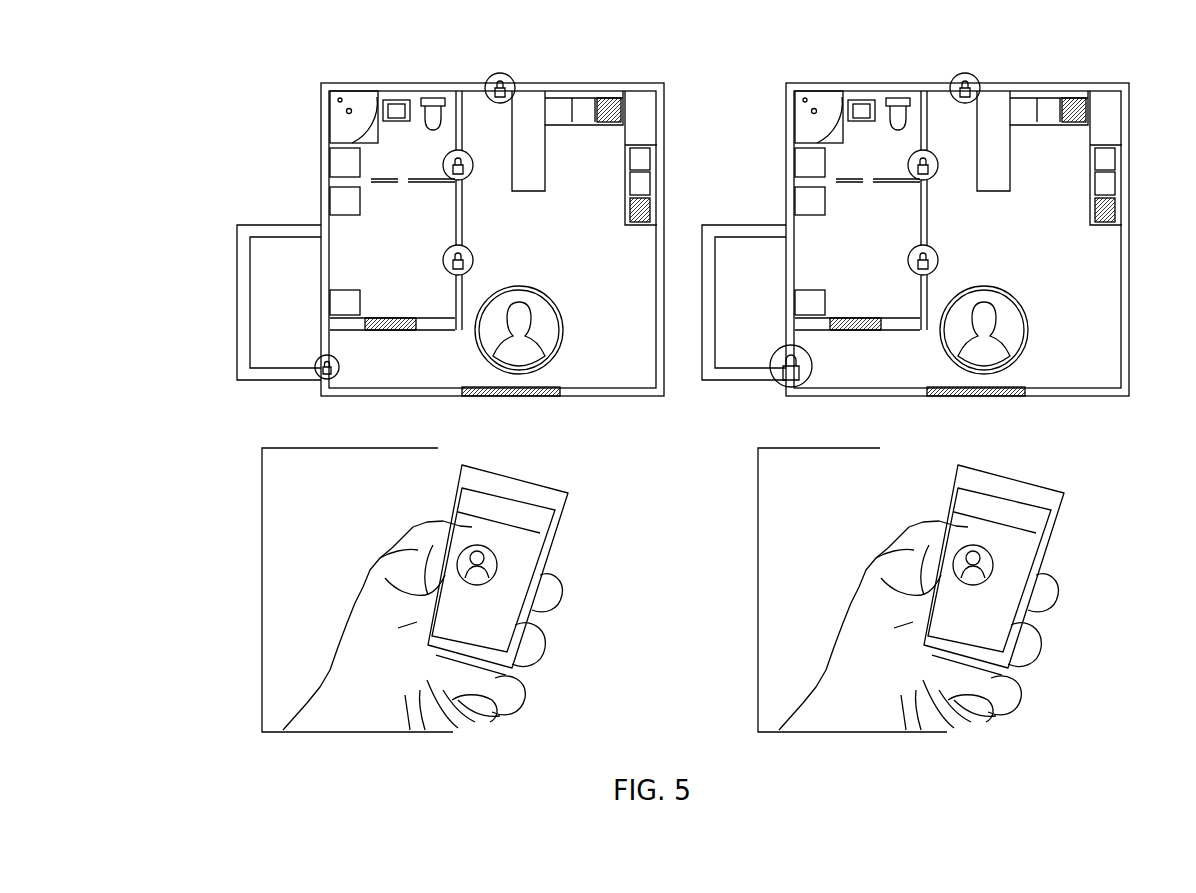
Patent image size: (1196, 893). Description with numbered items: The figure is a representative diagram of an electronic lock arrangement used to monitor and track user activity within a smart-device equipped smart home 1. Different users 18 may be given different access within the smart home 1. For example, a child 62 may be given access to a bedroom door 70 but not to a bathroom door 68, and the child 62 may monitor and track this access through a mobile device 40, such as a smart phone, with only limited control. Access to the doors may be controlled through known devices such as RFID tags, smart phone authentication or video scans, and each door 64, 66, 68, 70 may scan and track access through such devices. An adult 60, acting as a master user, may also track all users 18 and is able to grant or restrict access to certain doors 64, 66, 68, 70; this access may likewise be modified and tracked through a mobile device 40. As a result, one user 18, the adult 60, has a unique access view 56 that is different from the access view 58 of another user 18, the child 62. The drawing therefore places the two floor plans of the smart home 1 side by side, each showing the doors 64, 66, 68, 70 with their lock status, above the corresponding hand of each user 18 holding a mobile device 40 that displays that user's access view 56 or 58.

The smart home 1 is at (318, 226).
The access view 56 is at (304, 96).
The access view 58 is at (769, 96).
The adult 60 is at (243, 486).
The child 62 is at (745, 486).
The door 64 is at (340, 366).
The door 66 is at (514, 82).
The bathroom door 68 is at (467, 172).
The bedroom door 70 is at (467, 250).
The mobile device 40 is at (548, 492).
The user 18 is at (370, 688).